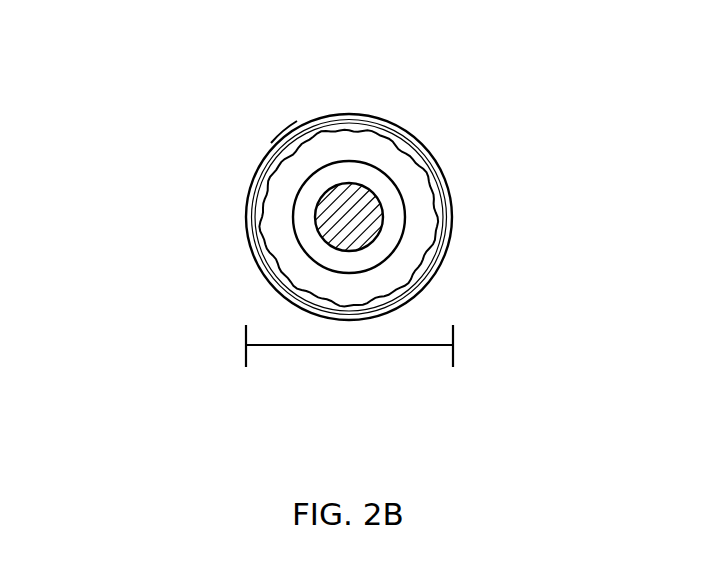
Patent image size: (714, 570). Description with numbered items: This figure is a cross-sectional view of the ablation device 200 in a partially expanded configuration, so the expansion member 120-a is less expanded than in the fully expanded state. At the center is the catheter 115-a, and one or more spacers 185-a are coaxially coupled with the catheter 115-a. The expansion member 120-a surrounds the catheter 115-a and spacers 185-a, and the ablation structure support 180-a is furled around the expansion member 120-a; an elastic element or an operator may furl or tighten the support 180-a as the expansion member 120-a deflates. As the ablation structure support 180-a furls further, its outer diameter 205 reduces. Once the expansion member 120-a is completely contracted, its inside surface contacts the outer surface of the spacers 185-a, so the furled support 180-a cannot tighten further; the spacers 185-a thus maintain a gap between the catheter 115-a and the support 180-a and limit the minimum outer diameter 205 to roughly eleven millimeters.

The ablation device 200 is at (137, 68).
The expansion member 120-a is at (310, 139).
The ablation structure support 180-a is at (395, 120).
The catheter 115-a is at (380, 198).
The spacers 185-a is at (398, 243).
The outer diameter 205 is at (383, 345).